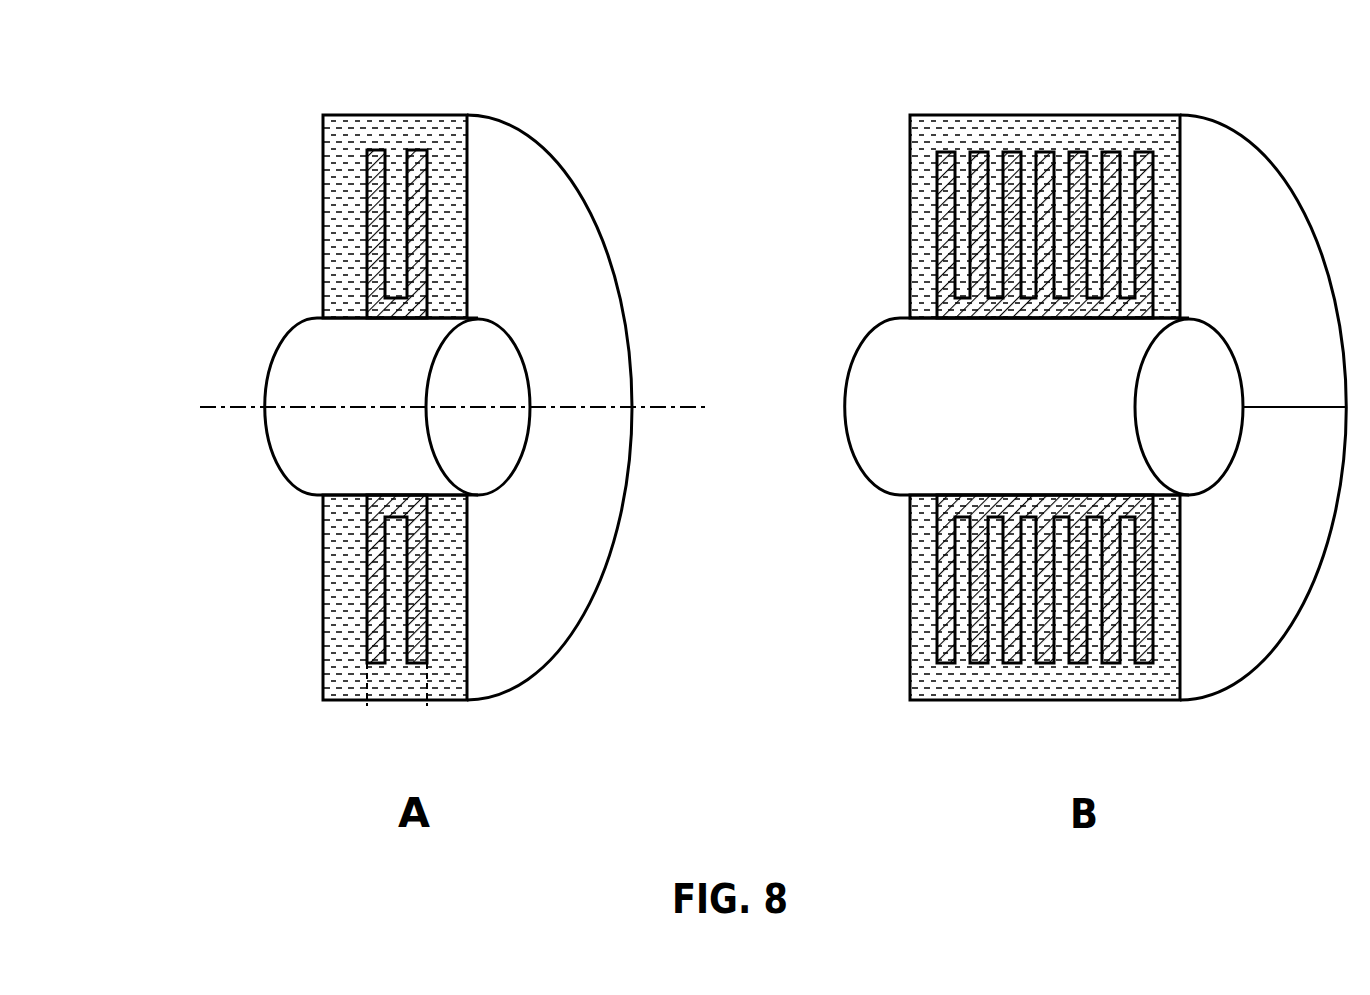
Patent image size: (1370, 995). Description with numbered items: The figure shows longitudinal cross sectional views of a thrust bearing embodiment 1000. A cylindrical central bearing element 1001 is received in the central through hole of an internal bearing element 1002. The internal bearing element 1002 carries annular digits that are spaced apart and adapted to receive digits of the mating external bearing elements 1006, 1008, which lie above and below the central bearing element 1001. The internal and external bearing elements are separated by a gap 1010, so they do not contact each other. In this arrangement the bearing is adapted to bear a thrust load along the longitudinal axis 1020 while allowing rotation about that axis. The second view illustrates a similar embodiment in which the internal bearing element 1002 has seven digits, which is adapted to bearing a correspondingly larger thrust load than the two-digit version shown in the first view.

In FIG. 8A, the thrust bearing embodiment 1000 is at (435, 419).
In FIG. 8A, the cylindrical central bearing element 1001 is at (317, 452).
In FIG. 8B, the cylindrical central bearing element 1001 is at (943, 463).
In FIG. 8A, the internal bearing element 1002 is at (427, 714).
In FIG. 8B, the internal bearing element 1002 is at (1148, 325).
In FIG. 8A, the external bearing element 1006 is at (422, 553).
In FIG. 8B, the external bearing element 1006 is at (1177, 713).
In FIG. 8A, the external bearing element 1008 is at (422, 260).
In FIG. 8B, the external bearing element 1008 is at (1045, 215).
In FIG. 8A, the gap 1010 is at (367, 190).
In FIG. 8A, the longitudinal axis 1020 is at (221, 411).